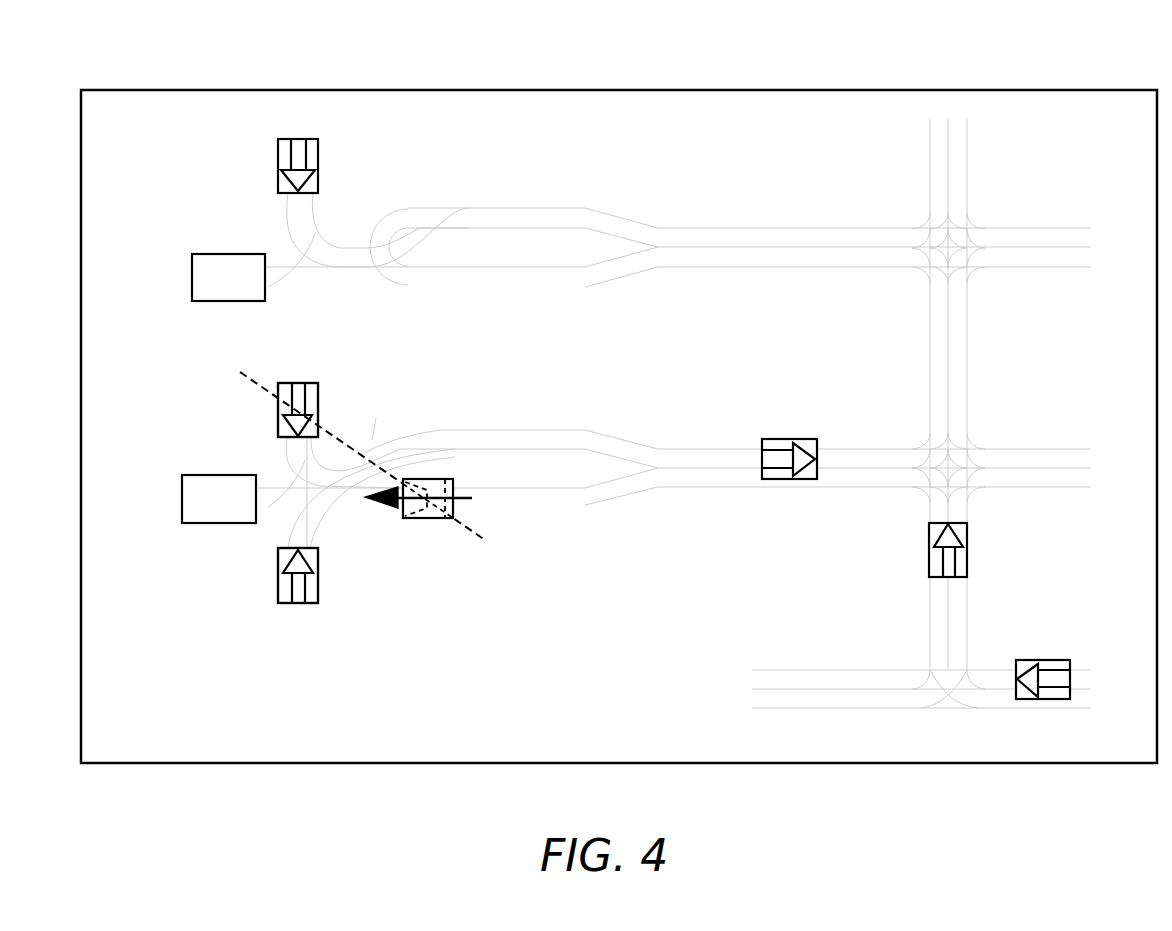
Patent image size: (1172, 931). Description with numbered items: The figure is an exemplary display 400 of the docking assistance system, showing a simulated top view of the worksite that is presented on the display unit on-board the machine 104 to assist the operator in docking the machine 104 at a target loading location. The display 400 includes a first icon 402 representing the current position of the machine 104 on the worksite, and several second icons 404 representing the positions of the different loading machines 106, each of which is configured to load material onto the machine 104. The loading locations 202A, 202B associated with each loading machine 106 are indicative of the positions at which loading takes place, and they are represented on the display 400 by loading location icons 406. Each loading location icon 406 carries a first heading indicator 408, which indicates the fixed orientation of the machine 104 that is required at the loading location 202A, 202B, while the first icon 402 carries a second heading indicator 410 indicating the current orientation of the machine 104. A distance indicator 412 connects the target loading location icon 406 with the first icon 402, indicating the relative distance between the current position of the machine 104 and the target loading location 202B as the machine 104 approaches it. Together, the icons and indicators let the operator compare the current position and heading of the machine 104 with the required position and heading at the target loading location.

The display 400 is at (668, 72).
The loading machine 106 is at (192, 264).
The second icon 404 is at (230, 302).
The loading location icon 406 is at (318, 157).
The first heading indicator 408 is at (280, 178).
The loading location 202A is at (287, 603).
The loading location 202B is at (317, 401).
The distance indicator 412 is at (342, 440).
The first icon 402 is at (430, 517).
The machine 104 is at (413, 519).
The second heading indicator 410 is at (472, 498).